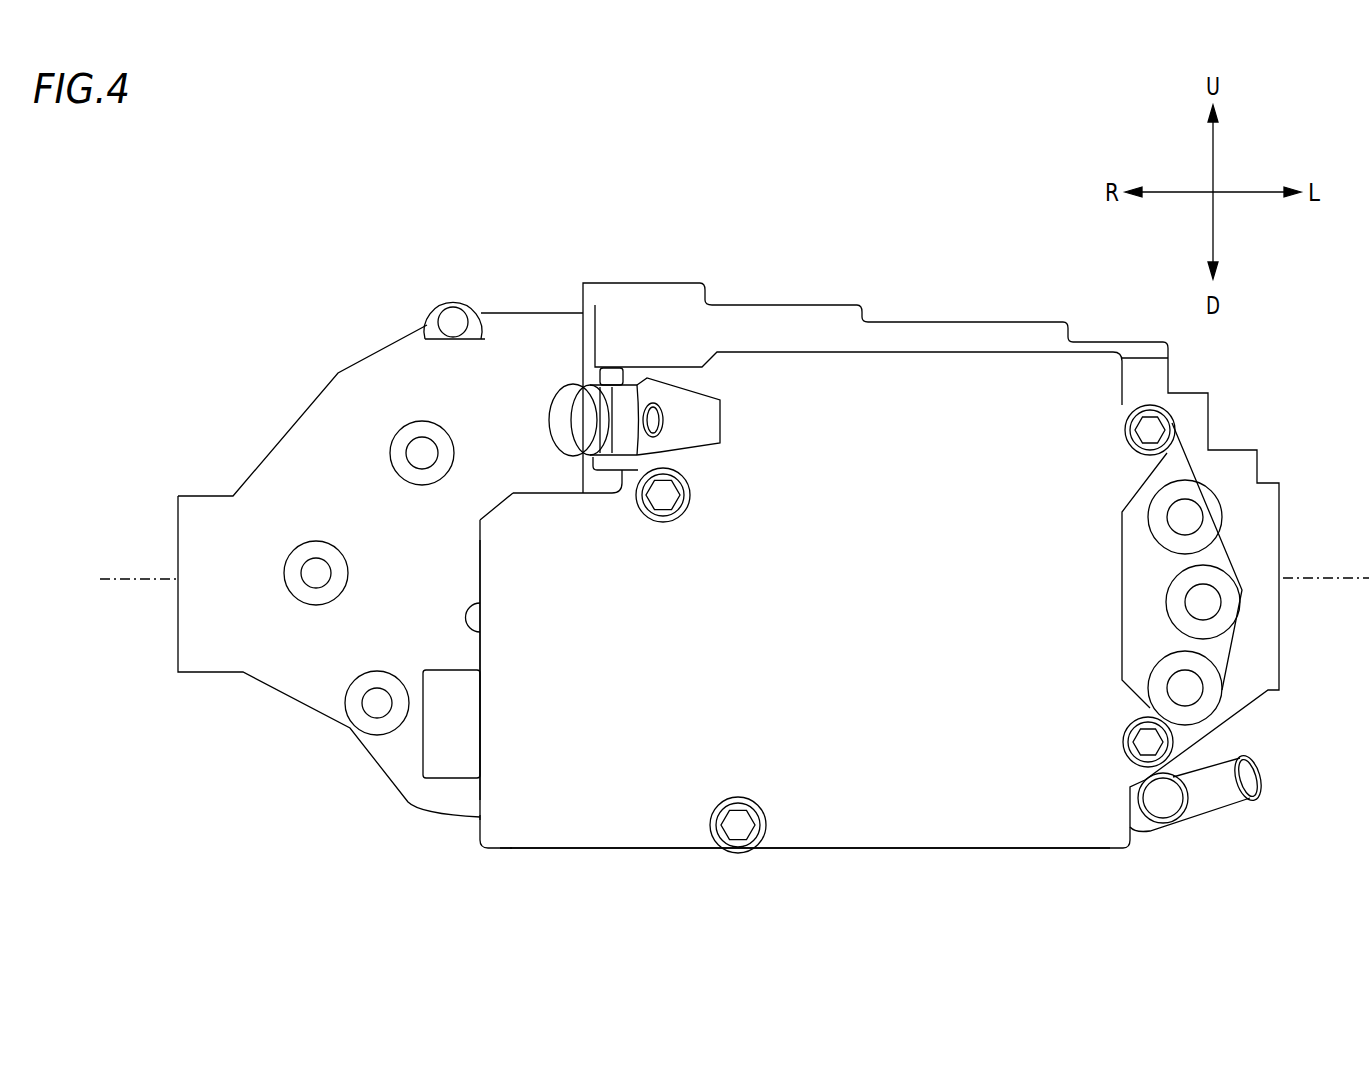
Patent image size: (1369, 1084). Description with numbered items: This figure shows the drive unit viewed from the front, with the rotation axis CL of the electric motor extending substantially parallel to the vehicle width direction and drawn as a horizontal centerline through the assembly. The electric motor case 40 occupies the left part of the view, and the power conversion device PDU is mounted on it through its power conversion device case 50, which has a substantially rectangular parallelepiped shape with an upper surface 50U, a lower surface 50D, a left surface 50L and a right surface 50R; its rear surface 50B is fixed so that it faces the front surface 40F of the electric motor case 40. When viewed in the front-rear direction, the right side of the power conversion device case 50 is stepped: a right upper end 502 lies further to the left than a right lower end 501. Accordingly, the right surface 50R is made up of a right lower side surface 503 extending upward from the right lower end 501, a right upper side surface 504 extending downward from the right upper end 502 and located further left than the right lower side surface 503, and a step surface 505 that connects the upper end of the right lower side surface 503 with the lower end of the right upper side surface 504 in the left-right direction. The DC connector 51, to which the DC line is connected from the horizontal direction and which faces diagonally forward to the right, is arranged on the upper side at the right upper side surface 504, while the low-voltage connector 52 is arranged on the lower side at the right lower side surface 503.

The electric motor case 40 is at (363, 378).
The front surface of the electric motor case 40F is at (523, 432).
The power conversion device case 50 is at (822, 566).
The power conversion device PDU is at (822, 566).
The upper surface 50U is at (767, 353).
The lower surface 50D is at (817, 849).
The left surface 50L is at (1127, 383).
The right surface 50R is at (478, 547).
The rear surface 50B is at (893, 693).
The DC connector 51 is at (567, 440).
The low-voltage connector 52 is at (440, 765).
The right lower end 501 is at (490, 851).
The right upper end 502 is at (591, 342).
The right lower side surface 503 is at (481, 605).
The right upper side surface 504 is at (620, 475).
The step surface 505 is at (535, 490).
The rotation axis CL is at (120, 578).